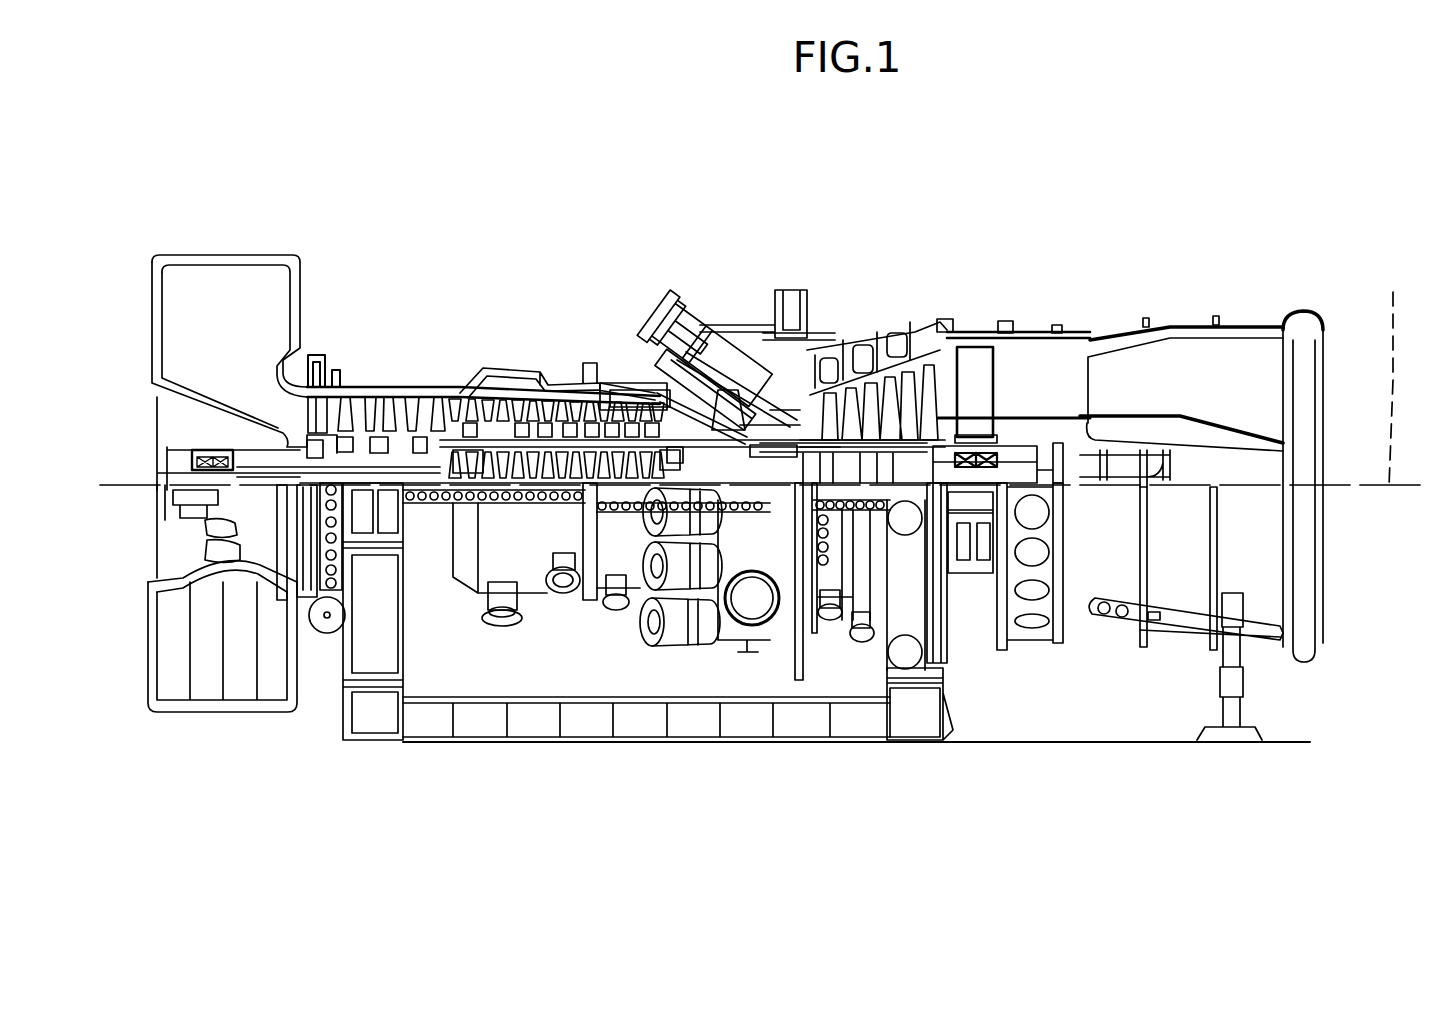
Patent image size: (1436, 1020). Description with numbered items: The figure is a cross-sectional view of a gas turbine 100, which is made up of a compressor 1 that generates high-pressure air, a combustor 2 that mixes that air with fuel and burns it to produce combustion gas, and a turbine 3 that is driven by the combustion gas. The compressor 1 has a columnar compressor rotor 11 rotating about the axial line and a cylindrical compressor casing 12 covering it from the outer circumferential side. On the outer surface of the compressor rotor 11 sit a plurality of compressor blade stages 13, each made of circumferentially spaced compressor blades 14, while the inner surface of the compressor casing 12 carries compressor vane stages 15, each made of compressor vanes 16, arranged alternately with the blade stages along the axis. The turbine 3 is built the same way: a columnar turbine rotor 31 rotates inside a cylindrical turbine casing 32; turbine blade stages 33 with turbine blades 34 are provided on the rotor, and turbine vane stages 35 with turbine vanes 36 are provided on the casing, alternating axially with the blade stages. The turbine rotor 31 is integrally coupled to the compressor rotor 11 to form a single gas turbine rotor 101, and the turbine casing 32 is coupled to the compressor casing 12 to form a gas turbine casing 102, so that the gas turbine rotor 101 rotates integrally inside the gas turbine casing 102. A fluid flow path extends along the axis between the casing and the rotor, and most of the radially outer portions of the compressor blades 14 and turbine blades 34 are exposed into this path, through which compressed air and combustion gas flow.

The gas turbine 100 is at (1250, 198).
The compressor 1 is at (398, 236).
The combustor 2 is at (700, 197).
The turbine 3 is at (1070, 283).
The compressor rotor 11 is at (398, 450).
The gas turbine rotor 101 is at (586, 554).
The compressor casing 12 is at (507, 364).
The gas turbine casing 102 is at (557, 381).
The compressor blade stages 13 is at (357, 405).
The compressor blades 14 is at (352, 415).
The compressor vane stages 15 is at (447, 407).
The compressor vanes 16 is at (534, 414).
The turbine rotor 31 is at (918, 462).
The turbine casing 32 is at (907, 330).
The turbine blade stages 33 is at (843, 373).
The turbine blades 34 is at (862, 355).
The turbine vane stages 35 is at (893, 377).
The turbine vanes 36 is at (880, 402).